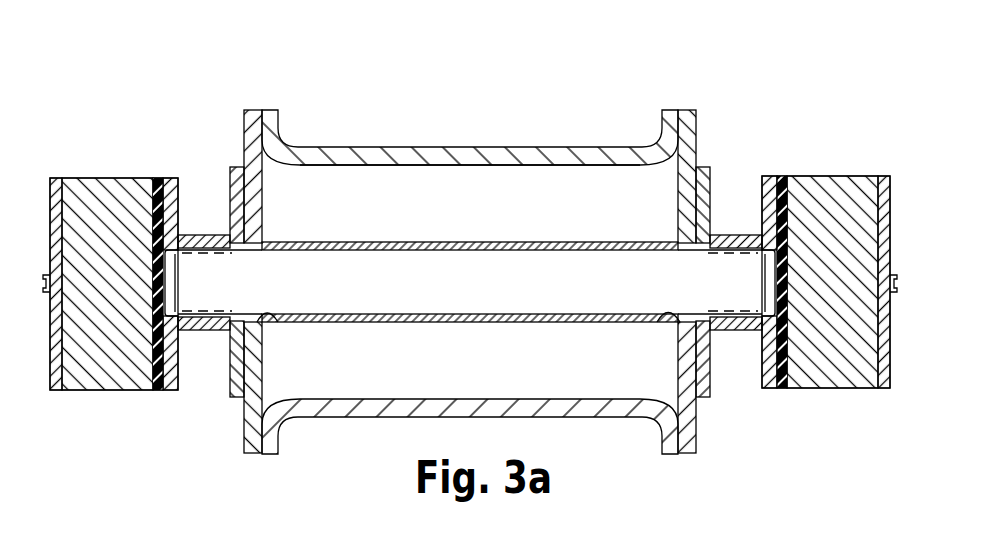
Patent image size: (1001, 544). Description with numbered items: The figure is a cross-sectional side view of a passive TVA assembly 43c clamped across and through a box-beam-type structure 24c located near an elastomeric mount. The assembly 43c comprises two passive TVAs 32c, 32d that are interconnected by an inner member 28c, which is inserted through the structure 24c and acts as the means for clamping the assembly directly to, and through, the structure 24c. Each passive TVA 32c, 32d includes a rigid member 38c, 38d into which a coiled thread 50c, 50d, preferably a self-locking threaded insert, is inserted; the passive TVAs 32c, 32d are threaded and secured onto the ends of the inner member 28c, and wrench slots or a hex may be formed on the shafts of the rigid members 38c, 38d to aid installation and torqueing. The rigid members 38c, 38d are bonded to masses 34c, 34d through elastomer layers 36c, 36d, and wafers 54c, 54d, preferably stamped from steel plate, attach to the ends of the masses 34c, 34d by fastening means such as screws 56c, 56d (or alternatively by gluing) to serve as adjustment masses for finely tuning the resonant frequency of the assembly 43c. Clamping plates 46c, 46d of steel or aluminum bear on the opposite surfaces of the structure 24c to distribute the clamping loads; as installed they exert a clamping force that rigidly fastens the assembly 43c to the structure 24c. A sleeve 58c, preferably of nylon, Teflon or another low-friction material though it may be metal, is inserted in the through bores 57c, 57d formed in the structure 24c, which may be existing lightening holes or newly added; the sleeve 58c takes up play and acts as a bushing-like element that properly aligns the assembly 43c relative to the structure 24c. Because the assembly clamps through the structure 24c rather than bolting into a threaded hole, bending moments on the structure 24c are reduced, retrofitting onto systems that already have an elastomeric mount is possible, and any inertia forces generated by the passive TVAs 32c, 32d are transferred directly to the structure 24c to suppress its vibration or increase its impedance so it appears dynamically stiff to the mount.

The structure 24c is at (700, 432).
The inner member 28c is at (372, 296).
The passive TVA 32c is at (151, 166).
The passive TVA 32d is at (803, 162).
The mass 34c is at (86, 296).
The mass 34d is at (813, 297).
The elastomer layer 36c is at (157, 391).
The elastomer layer 36d is at (784, 388).
The rigid member 38c is at (178, 179).
The rigid member 38d is at (770, 389).
The passive TVA assembly 43c is at (418, 192).
The clamping plate 46c is at (238, 166).
The clamping plate 46d is at (702, 166).
The coiled thread 50c is at (203, 332).
The coiled thread 50d is at (733, 319).
The wafer 54c is at (54, 391).
The wafer 54d is at (886, 176).
The screw 56c is at (42, 272).
The screw 56d is at (897, 292).
The through bore 57c is at (278, 322).
The through bore 57d is at (658, 322).
The sleeve 58c is at (527, 241).